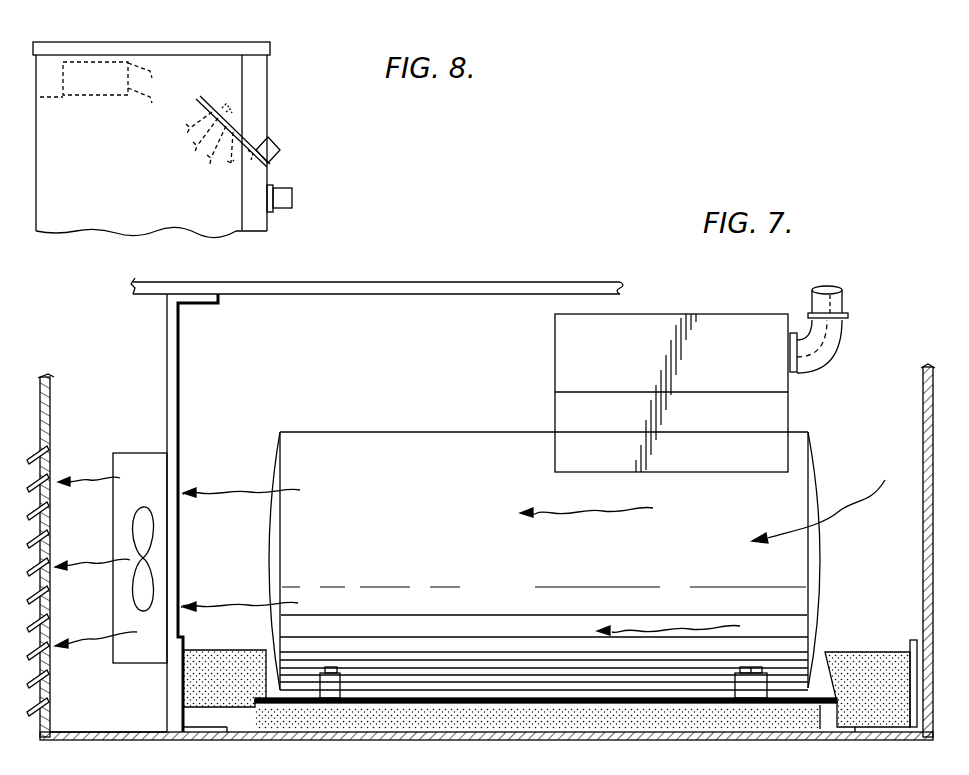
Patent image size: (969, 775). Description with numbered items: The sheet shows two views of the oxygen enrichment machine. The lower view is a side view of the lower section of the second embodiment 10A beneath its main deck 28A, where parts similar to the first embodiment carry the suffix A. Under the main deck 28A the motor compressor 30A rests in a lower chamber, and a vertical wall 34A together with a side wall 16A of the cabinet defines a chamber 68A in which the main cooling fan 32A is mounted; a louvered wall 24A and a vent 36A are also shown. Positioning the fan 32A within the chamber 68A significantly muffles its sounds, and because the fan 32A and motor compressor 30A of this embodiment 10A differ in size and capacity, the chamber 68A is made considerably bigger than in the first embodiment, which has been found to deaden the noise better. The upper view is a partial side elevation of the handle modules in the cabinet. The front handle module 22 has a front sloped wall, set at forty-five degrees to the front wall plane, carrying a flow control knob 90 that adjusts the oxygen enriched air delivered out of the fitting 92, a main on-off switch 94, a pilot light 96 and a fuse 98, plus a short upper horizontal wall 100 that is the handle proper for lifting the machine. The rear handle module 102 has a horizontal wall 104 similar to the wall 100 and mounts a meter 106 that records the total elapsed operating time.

In FIG. 7, the second embodiment 10A is at (503, 268).
In FIG. 7, the housing wall 16A is at (923, 433).
In FIG. 7, the louvered air inlet wall 24A is at (40, 446).
In FIG. 7, the main deck 28A is at (308, 285).
In FIG. 7, the motor compressor 30A is at (531, 565).
In FIG. 7, the fan 32A is at (133, 462).
In FIG. 7, the partition wall 34A is at (178, 372).
In FIG. 7, the vent pipe 36A is at (845, 299).
In FIG. 7, the chamber 68A is at (134, 706).
In FIG. 8, the front handle module 22 is at (188, 94).
In FIG. 8, the flow control knob 90 is at (282, 152).
In FIG. 8, the fitting 92 is at (292, 195).
In FIG. 8, the main on-off switch 94 is at (222, 128).
In FIG. 8, the pilot light 96 is at (213, 116).
In FIG. 8, the fuse 98 is at (205, 105).
In FIG. 8, the upper horizontal wall 100 is at (262, 62).
In FIG. 8, the rear handle module 102 is at (53, 97).
In FIG. 8, the horizontal wall 104 is at (55, 54).
In FIG. 8, the meter 106 is at (107, 93).